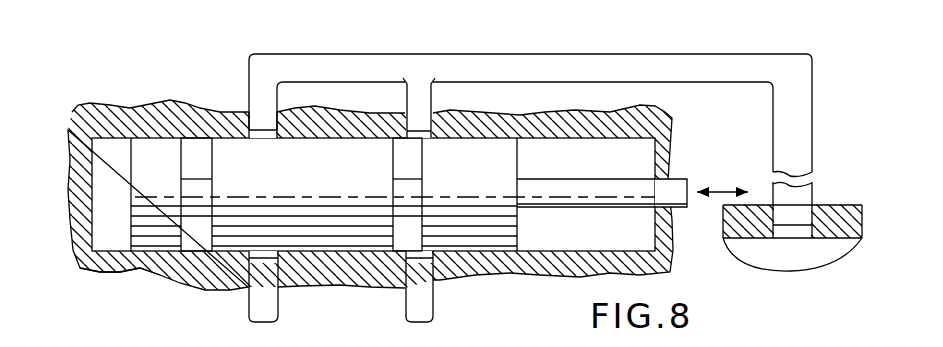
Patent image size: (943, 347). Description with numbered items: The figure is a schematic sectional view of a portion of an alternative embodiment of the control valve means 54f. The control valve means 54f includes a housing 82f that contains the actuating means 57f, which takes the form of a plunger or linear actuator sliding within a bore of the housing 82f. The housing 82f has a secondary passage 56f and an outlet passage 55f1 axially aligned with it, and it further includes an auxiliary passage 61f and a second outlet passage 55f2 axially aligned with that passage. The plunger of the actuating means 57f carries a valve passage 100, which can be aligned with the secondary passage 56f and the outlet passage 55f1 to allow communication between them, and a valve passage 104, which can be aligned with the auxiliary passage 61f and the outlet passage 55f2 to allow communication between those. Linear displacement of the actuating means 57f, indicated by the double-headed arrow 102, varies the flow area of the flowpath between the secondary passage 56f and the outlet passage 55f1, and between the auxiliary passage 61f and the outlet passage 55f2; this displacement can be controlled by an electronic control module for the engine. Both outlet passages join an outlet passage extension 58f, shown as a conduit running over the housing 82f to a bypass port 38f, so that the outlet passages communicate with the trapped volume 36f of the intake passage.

The control valve means 54f is at (133, 100).
The outlet passage 55f2 is at (264, 118).
The outlet passage 55f1 is at (415, 118).
The outlet passage extension 58f is at (518, 60).
The actuating means 57f is at (487, 178).
The arrow 102 is at (722, 188).
The trapped volume 36f is at (765, 253).
The bypass port 38f is at (797, 240).
The housing 82f is at (128, 270).
The valve passage 104 is at (200, 238).
The valve passage 100 is at (398, 227).
The auxiliary passage 61f is at (268, 275).
The secondary passage 56f is at (413, 275).